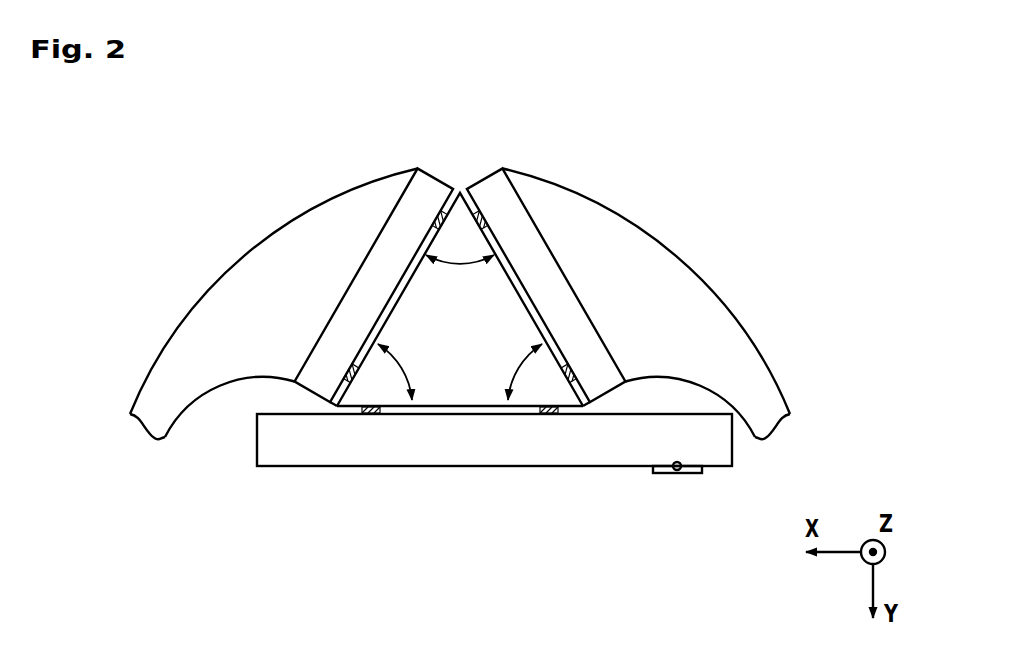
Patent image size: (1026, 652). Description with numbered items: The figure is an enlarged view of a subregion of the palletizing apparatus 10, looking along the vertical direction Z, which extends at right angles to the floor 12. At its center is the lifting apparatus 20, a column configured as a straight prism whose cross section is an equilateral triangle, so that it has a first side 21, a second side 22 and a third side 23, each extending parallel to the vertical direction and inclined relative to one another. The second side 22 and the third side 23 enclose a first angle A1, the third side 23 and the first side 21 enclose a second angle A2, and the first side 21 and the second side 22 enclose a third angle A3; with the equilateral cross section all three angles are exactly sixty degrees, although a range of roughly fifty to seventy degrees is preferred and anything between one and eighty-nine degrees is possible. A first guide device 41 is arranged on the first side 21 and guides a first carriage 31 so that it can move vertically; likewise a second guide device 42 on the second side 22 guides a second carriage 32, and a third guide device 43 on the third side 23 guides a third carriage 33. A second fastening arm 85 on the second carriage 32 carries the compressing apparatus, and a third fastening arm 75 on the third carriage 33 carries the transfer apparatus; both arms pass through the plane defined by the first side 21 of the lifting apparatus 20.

The palletizing apparatus 10 is at (674, 177).
The floor 12 is at (838, 251).
The lifting apparatus 20 is at (462, 327).
The first side 21 is at (450, 405).
The second side 22 is at (403, 307).
The third side 23 is at (517, 307).
The first carriage 31 is at (495, 443).
The second carriage 32 is at (387, 250).
The third carriage 33 is at (533, 250).
The first guide device 41 is at (375, 414).
The second guide device 42 is at (433, 213).
The third guide device 43 is at (487, 213).
The third fastening arm 75 is at (770, 413).
The second fastening arm 85 is at (150, 413).
The first angle A1 is at (460, 246).
The second angle A2 is at (535, 372).
The third angle A3 is at (389, 372).